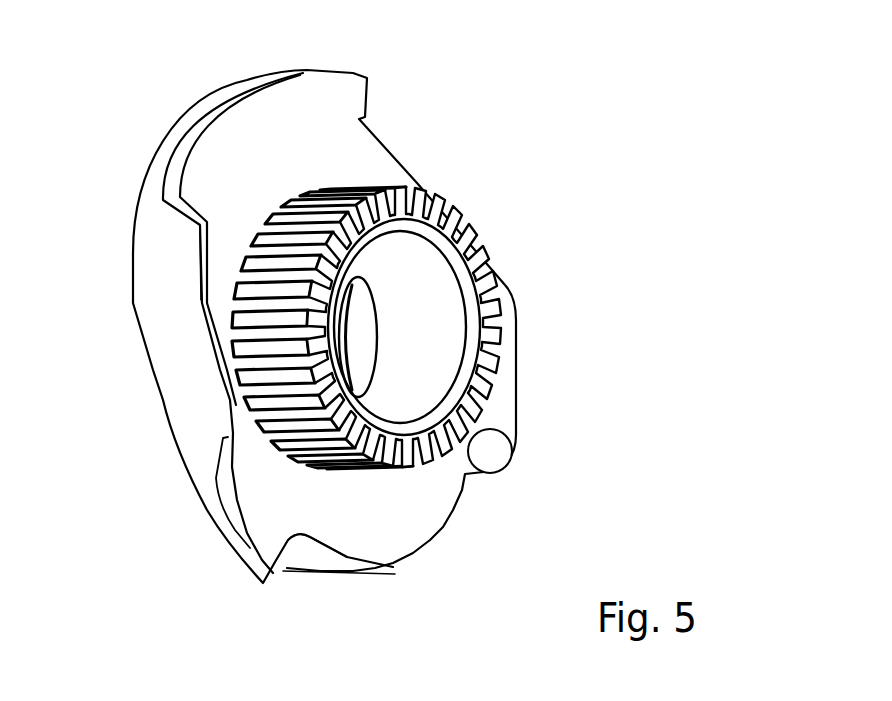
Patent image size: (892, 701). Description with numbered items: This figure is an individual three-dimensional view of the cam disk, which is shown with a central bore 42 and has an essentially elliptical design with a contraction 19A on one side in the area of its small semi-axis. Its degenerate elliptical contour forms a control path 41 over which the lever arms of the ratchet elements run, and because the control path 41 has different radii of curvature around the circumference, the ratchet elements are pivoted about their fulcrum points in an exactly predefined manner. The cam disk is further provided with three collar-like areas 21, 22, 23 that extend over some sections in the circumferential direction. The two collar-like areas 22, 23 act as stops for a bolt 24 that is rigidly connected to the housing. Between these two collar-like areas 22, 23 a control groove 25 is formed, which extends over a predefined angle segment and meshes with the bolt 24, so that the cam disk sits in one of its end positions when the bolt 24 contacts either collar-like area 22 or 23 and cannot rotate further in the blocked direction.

The contraction 19A is at (186, 388).
The collar-like area 21 is at (325, 117).
The collar-like area 22 is at (260, 520).
The collar-like area 23 is at (495, 412).
The bolt 24 is at (482, 457).
The control groove 25 is at (310, 582).
The control path 41 is at (170, 233).
The bore 42 is at (468, 250).